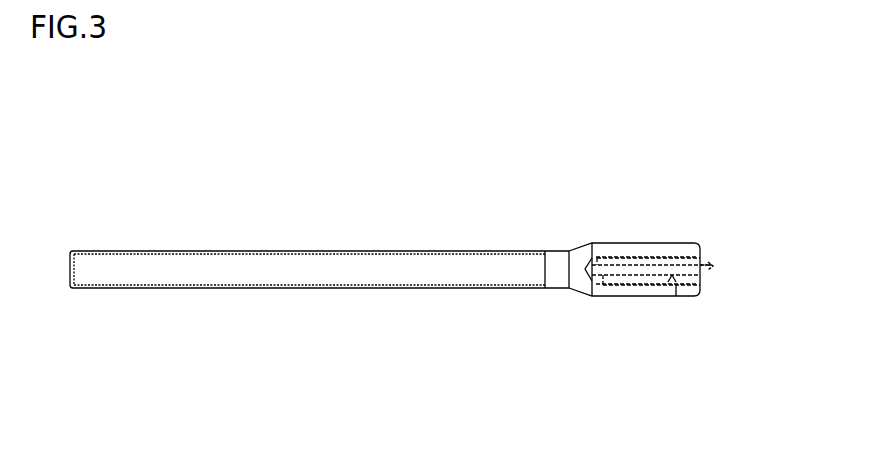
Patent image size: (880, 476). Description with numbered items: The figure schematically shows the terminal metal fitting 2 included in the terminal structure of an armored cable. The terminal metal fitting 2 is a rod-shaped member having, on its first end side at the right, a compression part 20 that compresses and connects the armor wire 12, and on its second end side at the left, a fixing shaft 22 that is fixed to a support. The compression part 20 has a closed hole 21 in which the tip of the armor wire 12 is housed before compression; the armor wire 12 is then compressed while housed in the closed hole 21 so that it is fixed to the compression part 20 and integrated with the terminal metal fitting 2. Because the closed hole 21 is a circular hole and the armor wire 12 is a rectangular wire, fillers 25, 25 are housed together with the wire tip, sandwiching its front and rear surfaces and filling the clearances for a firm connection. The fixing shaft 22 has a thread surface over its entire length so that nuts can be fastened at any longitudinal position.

The terminal metal fitting 2 is at (140, 213).
The fixing shaft 22 is at (570, 298).
The compression part 20 is at (621, 297).
The closed hole 21 is at (676, 297).
The filler 25 is at (697, 258).
The armor wire 12 is at (714, 268).